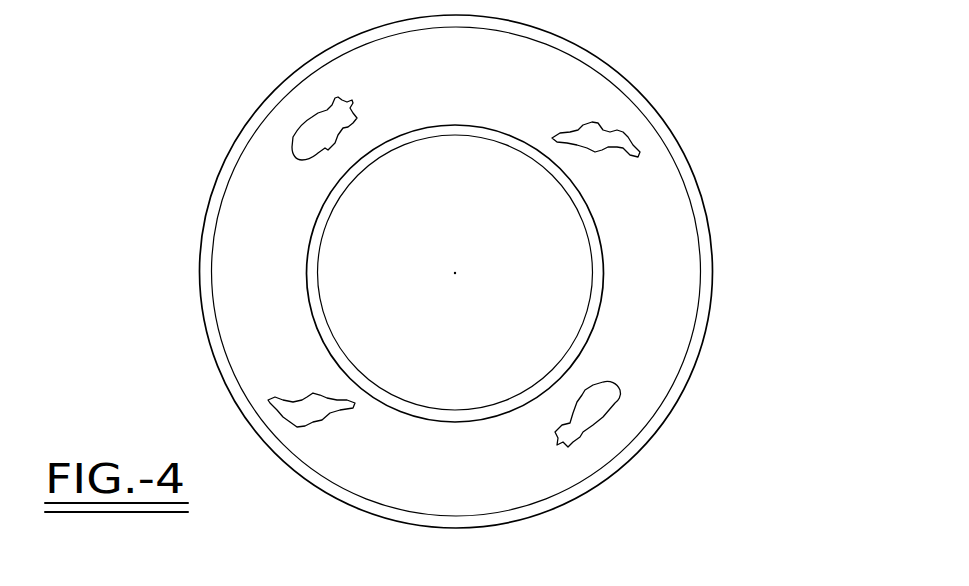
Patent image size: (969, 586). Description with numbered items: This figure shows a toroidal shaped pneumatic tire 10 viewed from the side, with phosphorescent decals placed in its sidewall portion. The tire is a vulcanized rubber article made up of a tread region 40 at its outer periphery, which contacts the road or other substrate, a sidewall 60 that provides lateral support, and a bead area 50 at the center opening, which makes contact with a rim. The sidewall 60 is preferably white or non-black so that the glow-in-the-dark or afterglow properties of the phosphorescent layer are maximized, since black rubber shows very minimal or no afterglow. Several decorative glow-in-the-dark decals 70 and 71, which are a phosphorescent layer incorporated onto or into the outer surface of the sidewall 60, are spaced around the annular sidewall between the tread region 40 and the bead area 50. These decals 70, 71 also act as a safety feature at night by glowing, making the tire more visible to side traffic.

The pneumatic tire 10 is at (215, 135).
The tread region 40 is at (190, 221).
The bead area 50 is at (576, 261).
The sidewall 60 is at (673, 263).
The glow-in-the-dark decal 70 is at (317, 132).
The glow-in-the-dark decal 71 is at (605, 132).